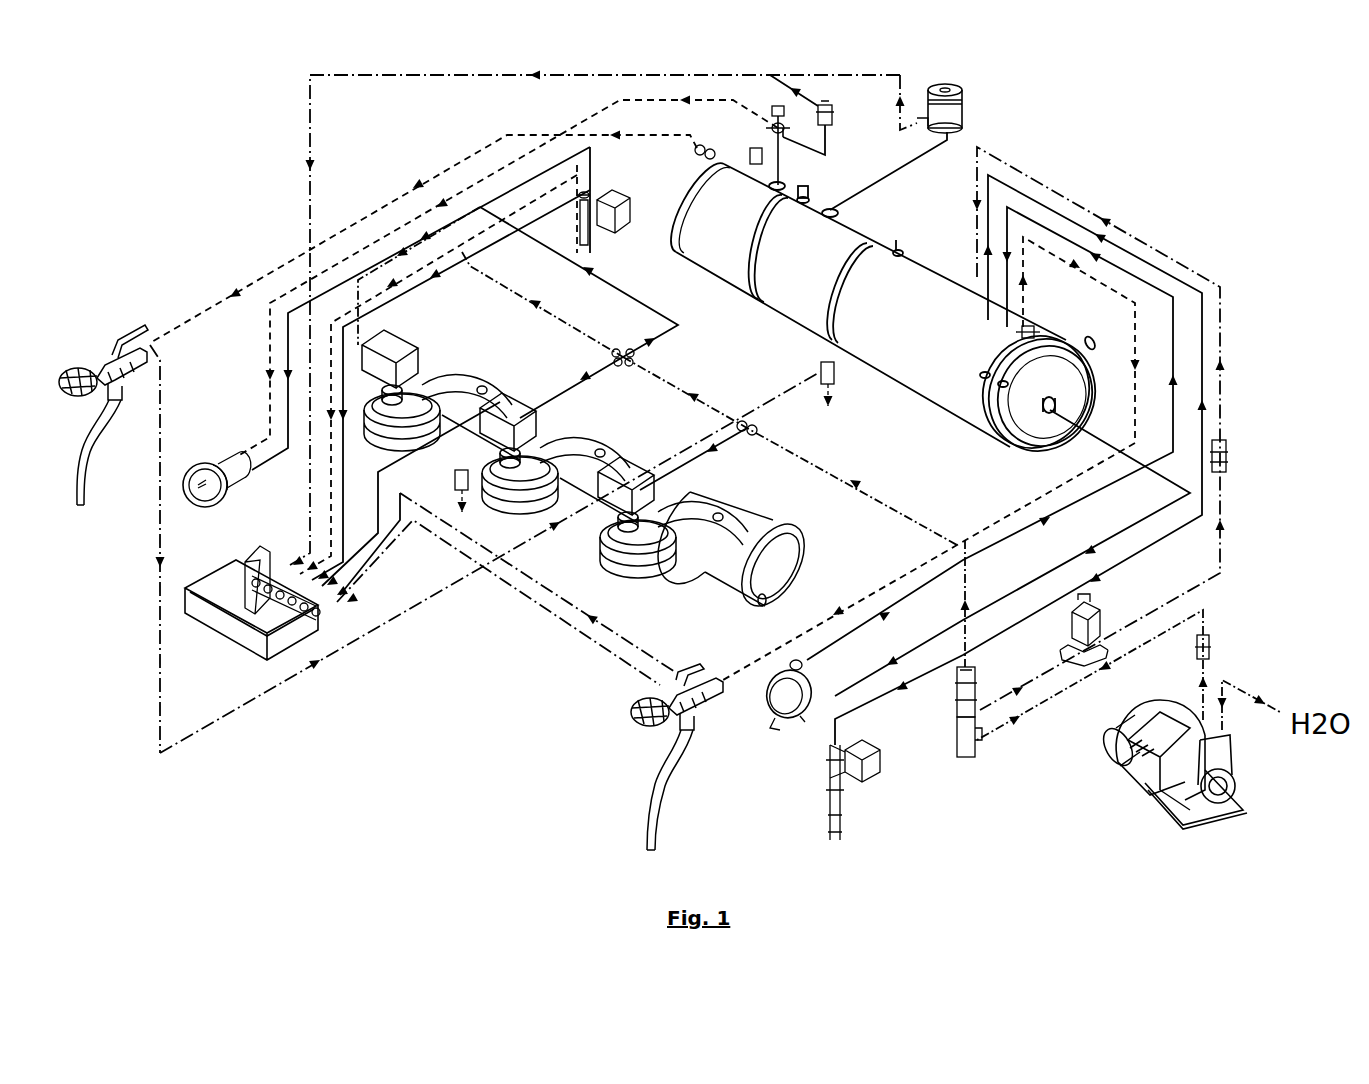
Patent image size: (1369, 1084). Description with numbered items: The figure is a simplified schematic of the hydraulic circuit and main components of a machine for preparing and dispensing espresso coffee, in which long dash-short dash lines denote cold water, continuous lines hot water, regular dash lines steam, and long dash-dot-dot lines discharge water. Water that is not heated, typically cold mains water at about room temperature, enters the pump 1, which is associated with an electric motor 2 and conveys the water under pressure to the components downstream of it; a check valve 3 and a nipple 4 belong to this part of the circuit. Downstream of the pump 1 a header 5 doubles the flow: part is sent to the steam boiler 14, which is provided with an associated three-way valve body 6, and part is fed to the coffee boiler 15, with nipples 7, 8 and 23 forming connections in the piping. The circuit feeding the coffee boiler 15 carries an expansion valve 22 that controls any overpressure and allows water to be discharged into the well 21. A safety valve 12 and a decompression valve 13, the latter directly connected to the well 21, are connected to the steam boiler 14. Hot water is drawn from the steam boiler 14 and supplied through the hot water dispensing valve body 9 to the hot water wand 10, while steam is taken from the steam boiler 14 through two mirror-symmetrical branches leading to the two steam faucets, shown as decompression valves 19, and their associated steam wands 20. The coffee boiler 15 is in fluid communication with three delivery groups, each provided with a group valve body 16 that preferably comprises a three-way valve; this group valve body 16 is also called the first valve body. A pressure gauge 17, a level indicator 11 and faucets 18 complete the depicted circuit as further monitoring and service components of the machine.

The pump 1 is at (1236, 786).
The electric motor 2 is at (1125, 760).
The check valve 3 is at (1226, 456).
The nipple 4 is at (1197, 647).
The header 5 is at (957, 740).
The 3-way valve body 6 is at (630, 210).
The nipple 7 is at (700, 155).
The nipple 8 is at (790, 138).
The hot water dispensing valve body 9 is at (878, 770).
The hot water wand 10 is at (828, 790).
The level indicator 11 is at (808, 720).
The safety valve 12 is at (963, 108).
The decompression valve 13 is at (833, 108).
The steam boiler 14 is at (640, 250).
The coffee boiler 15 is at (447, 345).
The group valve body 16 is at (400, 340).
The pressure gauge 17 is at (220, 462).
The faucet 18 is at (752, 152).
The decompression valve 19 is at (110, 345).
The steam wand 20 is at (90, 450).
The well 21 is at (230, 640).
The expansion valve 22 is at (247, 577).
The nipple 23 is at (482, 565).